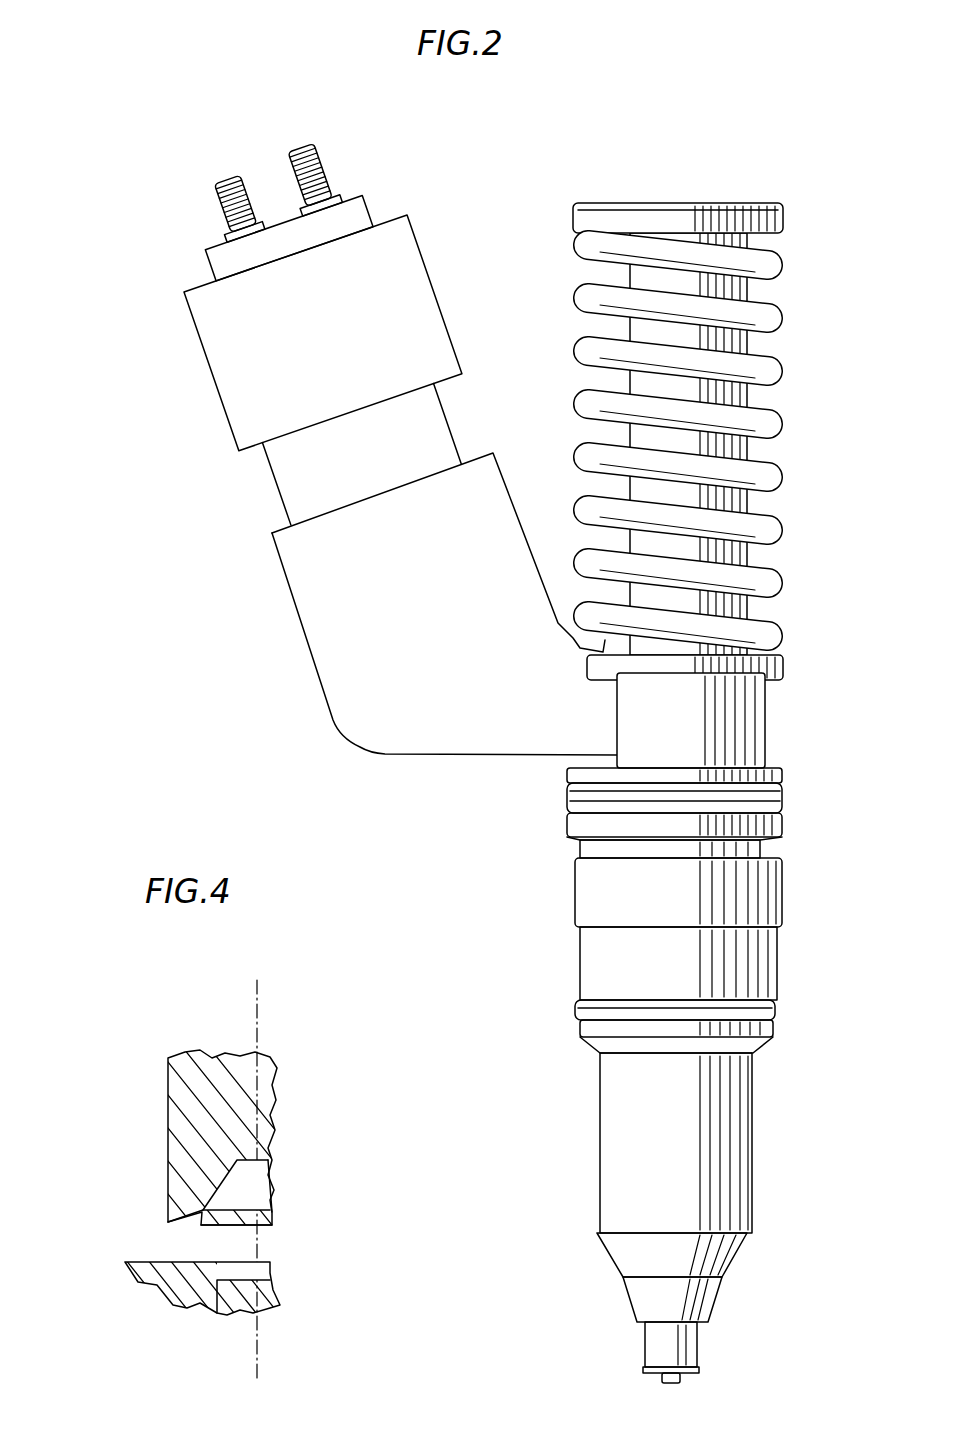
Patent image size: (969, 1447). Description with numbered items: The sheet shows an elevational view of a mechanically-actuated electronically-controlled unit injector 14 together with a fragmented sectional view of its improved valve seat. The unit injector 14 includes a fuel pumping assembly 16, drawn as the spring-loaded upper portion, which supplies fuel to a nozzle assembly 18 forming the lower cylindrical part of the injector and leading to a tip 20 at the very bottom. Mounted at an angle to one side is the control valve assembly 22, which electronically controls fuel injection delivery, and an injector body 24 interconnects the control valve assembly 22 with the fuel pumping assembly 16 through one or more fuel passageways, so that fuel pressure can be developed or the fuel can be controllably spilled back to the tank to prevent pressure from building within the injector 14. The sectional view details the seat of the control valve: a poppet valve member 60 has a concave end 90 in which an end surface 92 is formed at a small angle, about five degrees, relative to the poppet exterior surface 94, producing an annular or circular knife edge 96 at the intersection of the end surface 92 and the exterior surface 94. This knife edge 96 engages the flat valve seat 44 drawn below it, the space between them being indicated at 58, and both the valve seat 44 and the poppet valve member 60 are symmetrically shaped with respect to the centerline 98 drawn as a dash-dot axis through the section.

In FIG. 2, the unit injector 14 is at (838, 228).
In FIG. 2, the fuel pumping assembly 16 is at (776, 436).
In FIG. 2, the nozzle assembly 18 is at (752, 1133).
In FIG. 2, the tip 20 is at (698, 1363).
In FIG. 2, the control valve assembly 22 is at (220, 365).
In FIG. 2, the injector body 24 is at (325, 636).
In FIG. 4, the poppet valve member 60 is at (187, 1067).
In FIG. 4, the poppet exterior surface 94 is at (168, 1162).
In FIG. 4, the knife edge 96 is at (168, 1224).
In FIG. 4, the end surface 92 is at (200, 1228).
In FIG. 4, the concave end 90 is at (282, 1199).
In FIG. 4, the gap 58 is at (183, 1258).
In FIG. 4, the valve seat 44 is at (172, 1273).
In FIG. 4, the centerline 98 is at (250, 1345).